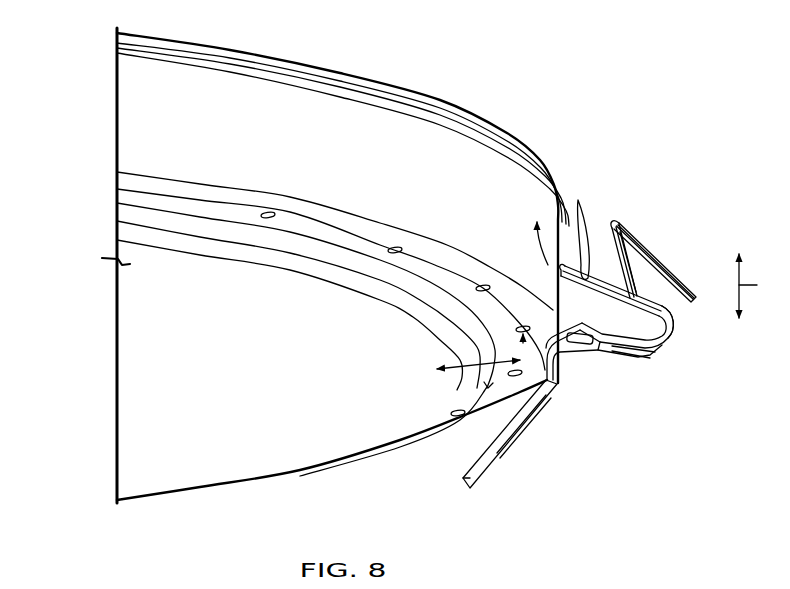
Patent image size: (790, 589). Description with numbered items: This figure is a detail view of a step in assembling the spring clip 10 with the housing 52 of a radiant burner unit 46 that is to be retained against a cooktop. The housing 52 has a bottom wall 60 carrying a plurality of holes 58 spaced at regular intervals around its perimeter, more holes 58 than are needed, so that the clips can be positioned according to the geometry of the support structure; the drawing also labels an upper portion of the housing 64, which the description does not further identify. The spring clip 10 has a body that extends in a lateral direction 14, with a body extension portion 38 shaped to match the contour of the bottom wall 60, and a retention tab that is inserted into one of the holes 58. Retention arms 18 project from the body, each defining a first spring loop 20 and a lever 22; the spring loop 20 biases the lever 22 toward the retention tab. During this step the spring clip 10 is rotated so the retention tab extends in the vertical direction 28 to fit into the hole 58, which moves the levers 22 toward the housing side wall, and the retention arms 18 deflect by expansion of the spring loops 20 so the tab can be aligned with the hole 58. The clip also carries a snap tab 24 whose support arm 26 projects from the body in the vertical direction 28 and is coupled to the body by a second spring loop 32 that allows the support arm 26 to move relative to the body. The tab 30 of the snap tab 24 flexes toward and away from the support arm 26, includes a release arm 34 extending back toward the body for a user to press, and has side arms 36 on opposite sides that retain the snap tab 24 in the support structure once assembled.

The spring clip 10 is at (730, 386).
The lateral direction 14 is at (457, 384).
The retention arm 18 is at (601, 266).
The first spring loop 20 is at (633, 355).
The lever 22 is at (611, 243).
The snap tab 24 is at (660, 281).
The support arm 26 is at (608, 248).
The vertical direction 28 is at (761, 286).
The tab 30 is at (667, 228).
The second spring loop 32 is at (654, 358).
The release arm 34 is at (656, 279).
The side arms 36 is at (645, 250).
The body extension portion 38 is at (480, 468).
The burner unit 46 is at (305, 421).
The housing 52 is at (186, 290).
The hole 58 is at (272, 212).
The bottom wall 60 is at (488, 388).
The rim 64 is at (537, 203).